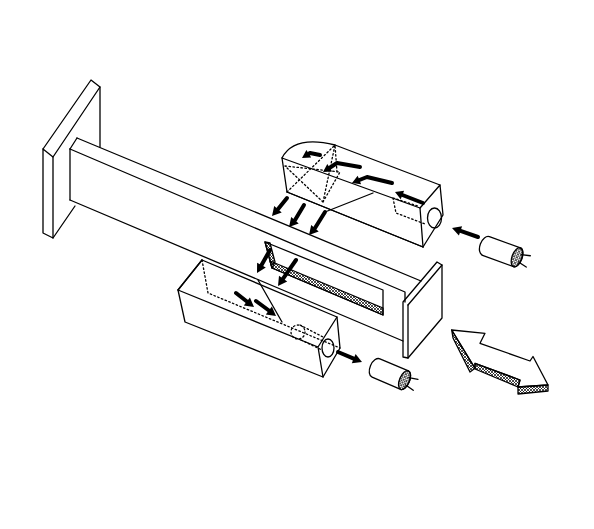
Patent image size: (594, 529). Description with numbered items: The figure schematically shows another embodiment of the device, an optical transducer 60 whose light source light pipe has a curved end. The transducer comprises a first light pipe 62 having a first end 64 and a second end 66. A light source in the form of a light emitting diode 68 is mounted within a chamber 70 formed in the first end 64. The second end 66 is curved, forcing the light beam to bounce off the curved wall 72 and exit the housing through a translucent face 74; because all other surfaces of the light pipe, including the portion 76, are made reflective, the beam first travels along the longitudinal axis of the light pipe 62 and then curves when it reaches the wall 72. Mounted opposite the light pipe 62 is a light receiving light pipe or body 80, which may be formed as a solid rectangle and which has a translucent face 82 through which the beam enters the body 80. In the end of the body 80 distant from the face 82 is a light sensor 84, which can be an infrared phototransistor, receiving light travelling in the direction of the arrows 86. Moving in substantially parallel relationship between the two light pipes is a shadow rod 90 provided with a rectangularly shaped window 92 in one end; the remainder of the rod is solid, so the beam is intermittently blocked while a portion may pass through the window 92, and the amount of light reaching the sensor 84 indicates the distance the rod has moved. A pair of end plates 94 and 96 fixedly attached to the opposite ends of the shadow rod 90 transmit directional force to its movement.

The optical transducer 60 is at (229, 153).
The first light pipe 62 is at (385, 178).
The first end 64 is at (439, 185).
The second end 66 is at (340, 141).
The light emitting diode 68 is at (508, 242).
The chamber 70 is at (445, 218).
The curved wall 72 is at (300, 142).
The translucent face 74 is at (292, 178).
The portion of the light pipe 76 is at (393, 240).
The light receiving light pipe 80 is at (252, 323).
The translucent face 82 is at (202, 260).
The light sensor 84 is at (392, 386).
The arrows 86 is at (284, 328).
The shadow rod 90 is at (245, 234).
The window 92 is at (328, 280).
The end plate 94 is at (440, 302).
The end plate 96 is at (78, 105).